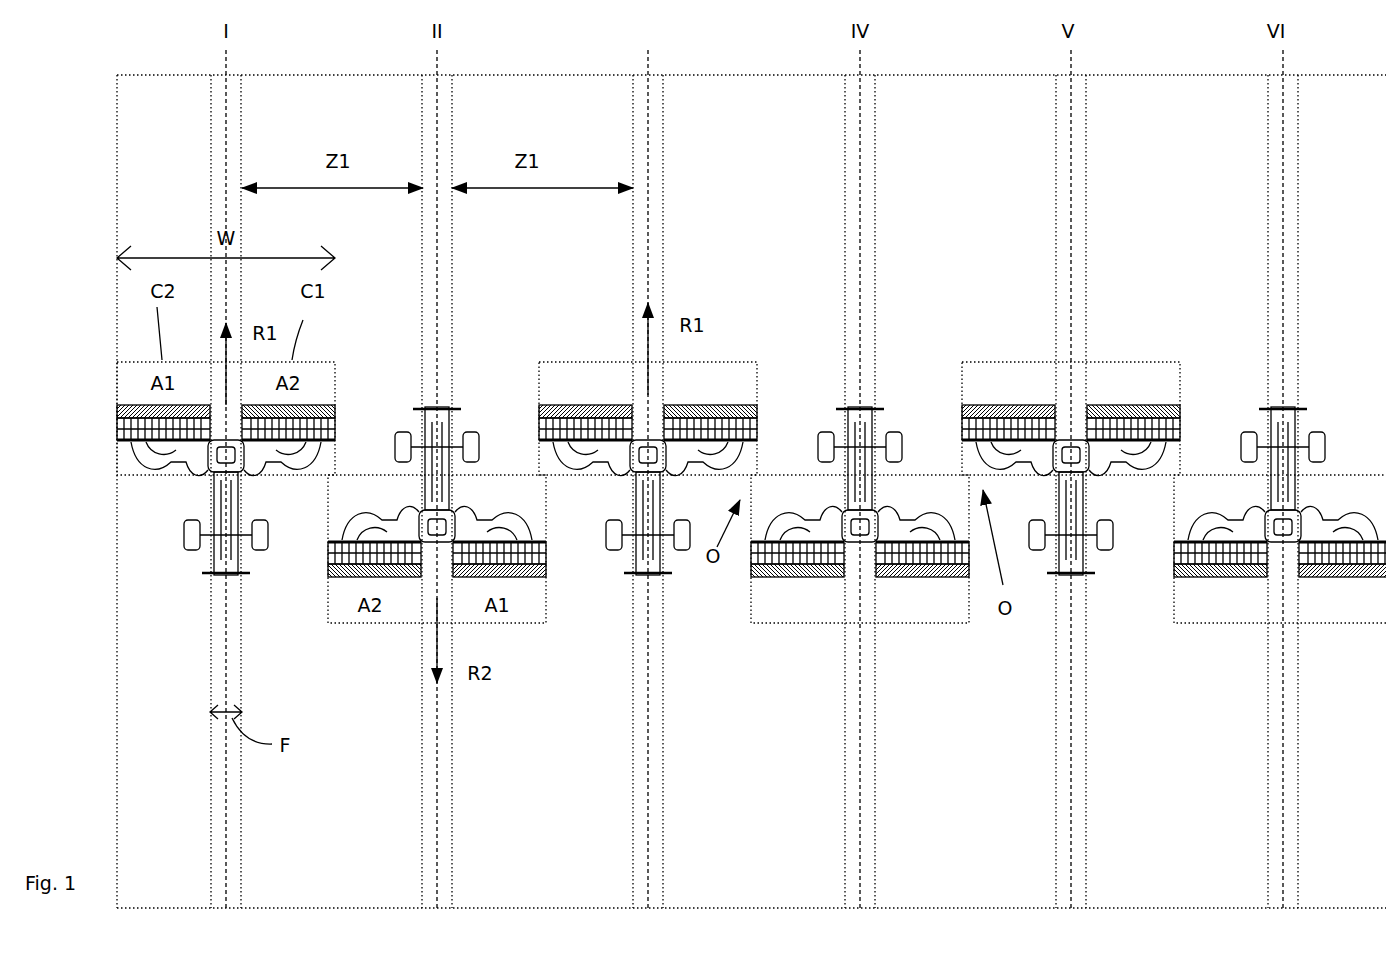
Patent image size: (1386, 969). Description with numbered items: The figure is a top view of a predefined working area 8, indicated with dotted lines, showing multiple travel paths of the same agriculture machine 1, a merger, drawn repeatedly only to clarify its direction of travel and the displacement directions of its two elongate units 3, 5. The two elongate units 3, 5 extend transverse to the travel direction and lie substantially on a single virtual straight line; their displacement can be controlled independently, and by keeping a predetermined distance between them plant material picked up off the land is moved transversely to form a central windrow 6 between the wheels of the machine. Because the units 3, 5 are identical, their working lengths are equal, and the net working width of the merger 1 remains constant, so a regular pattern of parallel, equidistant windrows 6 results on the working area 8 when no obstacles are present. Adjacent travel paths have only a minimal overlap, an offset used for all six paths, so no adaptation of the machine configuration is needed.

The agriculture machine 1 is at (721, 448).
The elongate unit 3 is at (122, 422).
The elongate unit 5 is at (307, 427).
The windrow 6 is at (238, 843).
The predefined working area 8 is at (142, 75).